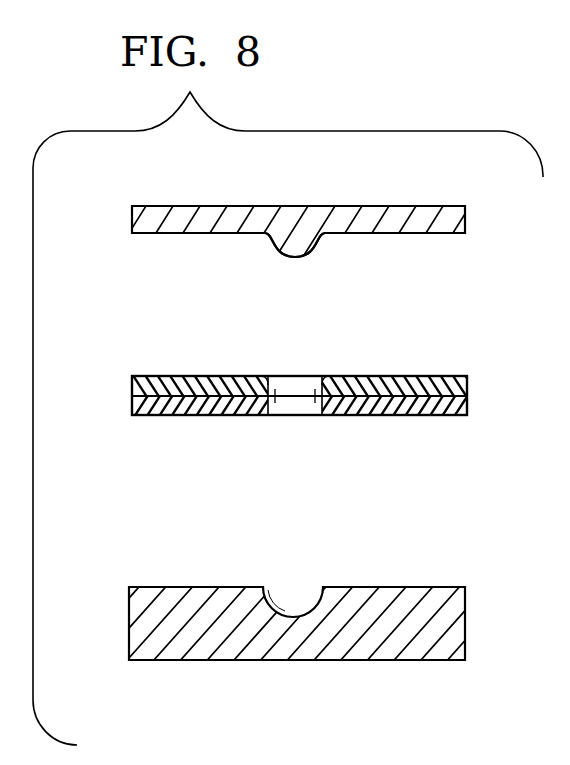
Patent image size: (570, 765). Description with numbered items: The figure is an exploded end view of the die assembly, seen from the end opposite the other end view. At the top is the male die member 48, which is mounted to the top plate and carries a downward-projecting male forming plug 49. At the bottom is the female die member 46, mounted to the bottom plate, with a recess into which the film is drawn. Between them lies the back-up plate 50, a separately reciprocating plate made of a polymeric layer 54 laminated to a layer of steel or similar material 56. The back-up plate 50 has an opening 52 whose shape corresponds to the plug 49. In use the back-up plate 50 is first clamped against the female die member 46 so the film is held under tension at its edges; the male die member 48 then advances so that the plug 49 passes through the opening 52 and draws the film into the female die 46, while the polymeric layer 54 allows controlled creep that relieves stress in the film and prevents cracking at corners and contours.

The female die member 46 is at (465, 628).
The male die member 48 is at (465, 226).
The male forming plug 49 is at (322, 244).
The back-up plate 50 is at (299, 384).
The opening 52 is at (312, 377).
The polymeric material layer 54 is at (132, 406).
The layer of steel 56 is at (132, 384).